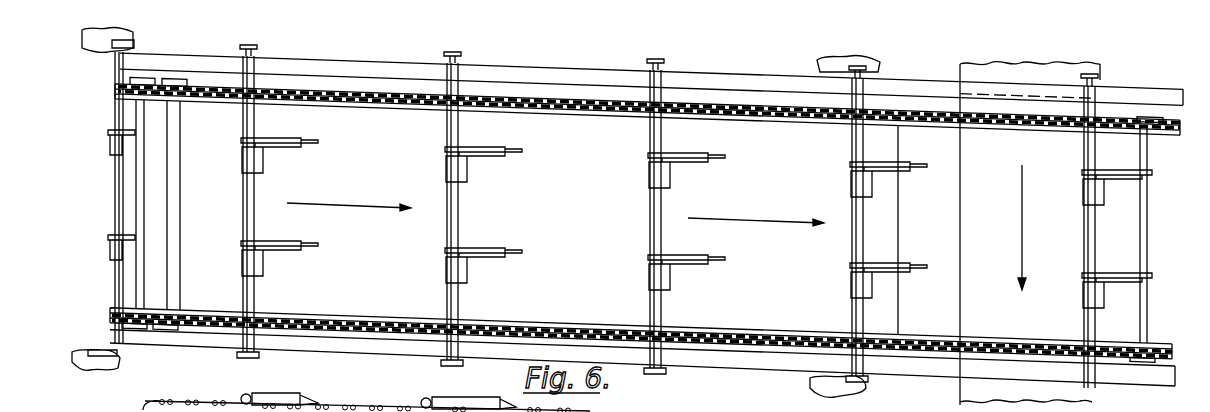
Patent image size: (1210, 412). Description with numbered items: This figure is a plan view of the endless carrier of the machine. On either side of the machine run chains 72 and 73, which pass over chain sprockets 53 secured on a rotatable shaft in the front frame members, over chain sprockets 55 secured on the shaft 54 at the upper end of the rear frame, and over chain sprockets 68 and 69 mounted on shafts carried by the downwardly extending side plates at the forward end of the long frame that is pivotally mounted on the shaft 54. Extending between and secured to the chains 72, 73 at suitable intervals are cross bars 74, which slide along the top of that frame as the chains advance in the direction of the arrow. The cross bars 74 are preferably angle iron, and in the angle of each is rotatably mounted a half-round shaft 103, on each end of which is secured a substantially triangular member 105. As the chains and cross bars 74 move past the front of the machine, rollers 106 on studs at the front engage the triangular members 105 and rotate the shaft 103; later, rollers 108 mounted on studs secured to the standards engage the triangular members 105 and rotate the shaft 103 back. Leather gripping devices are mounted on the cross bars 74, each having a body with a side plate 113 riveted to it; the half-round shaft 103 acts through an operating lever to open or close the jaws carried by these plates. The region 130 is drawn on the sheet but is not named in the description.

The chain sprockets 53 is at (1170, 114).
The shaft 54 is at (1151, 222).
The chain sprockets 55 is at (1157, 357).
The chain sprockets 68 is at (181, 77).
The chain sprockets 69 is at (138, 77).
The chain 72 is at (362, 322).
The chain 73 is at (340, 96).
The cross bars 74 is at (254, 200).
The half-round shaft 103 is at (455, 240).
The triangular member 105 is at (697, 386).
The rollers 106 is at (93, 343).
The rollers 108 is at (813, 379).
The side plate 113 is at (284, 396).
The broken section 130 is at (962, 392).